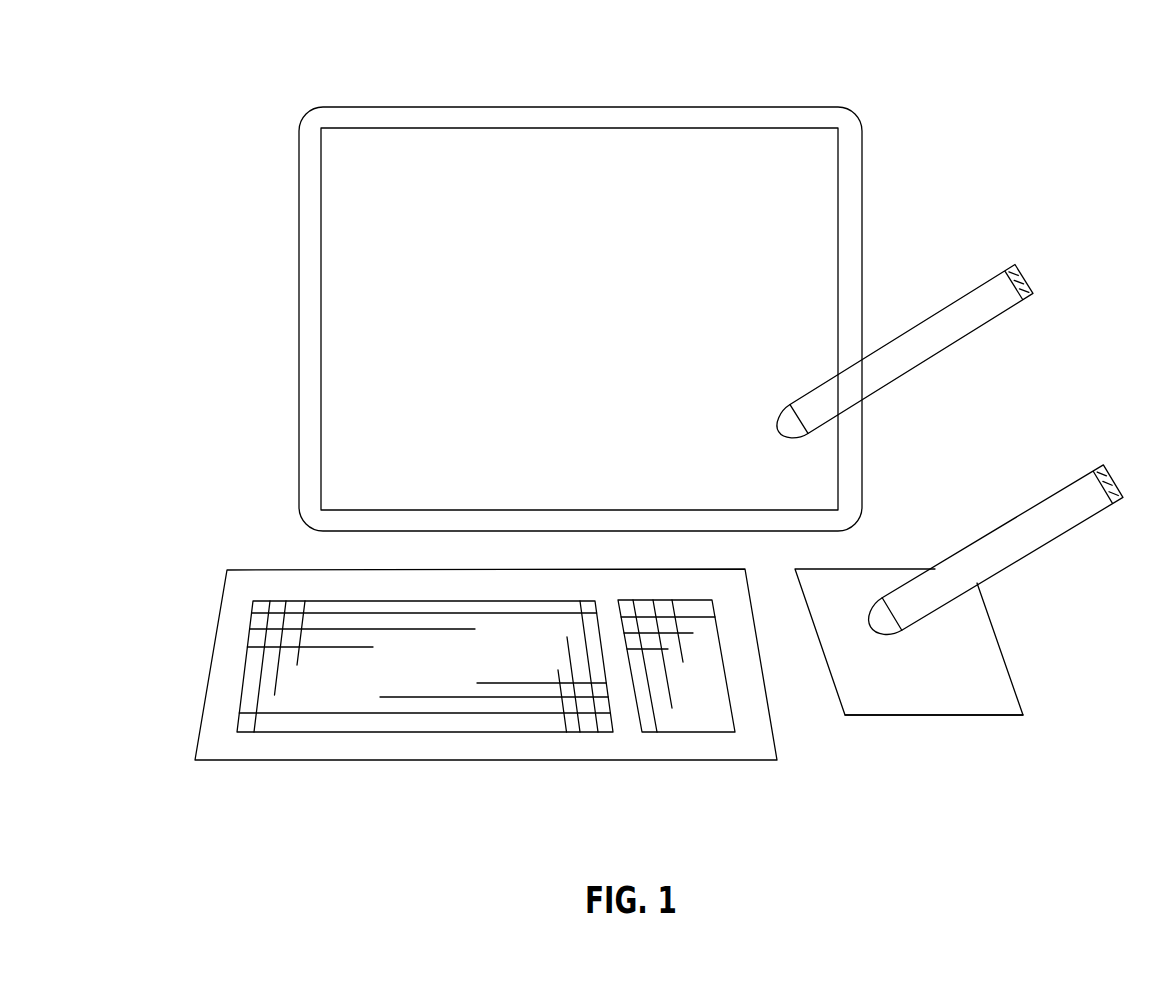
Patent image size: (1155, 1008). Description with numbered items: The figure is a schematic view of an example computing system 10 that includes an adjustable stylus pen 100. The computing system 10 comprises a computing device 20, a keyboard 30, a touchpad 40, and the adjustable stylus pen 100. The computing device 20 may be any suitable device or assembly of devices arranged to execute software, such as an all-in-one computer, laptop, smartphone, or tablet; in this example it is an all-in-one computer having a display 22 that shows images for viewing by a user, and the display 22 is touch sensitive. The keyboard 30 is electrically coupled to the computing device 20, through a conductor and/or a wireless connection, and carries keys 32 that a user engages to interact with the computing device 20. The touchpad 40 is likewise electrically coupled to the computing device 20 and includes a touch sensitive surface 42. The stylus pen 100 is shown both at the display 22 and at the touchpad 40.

The computing system 10 is at (896, 51).
The computing device 20 is at (735, 107).
The display 22 is at (820, 233).
The keyboard 30 is at (270, 568).
The keys 32 is at (258, 640).
The touchpad 40 is at (1003, 648).
The touch sensitive surface 42 is at (930, 695).
The adjustable stylus pen 100 is at (963, 295).